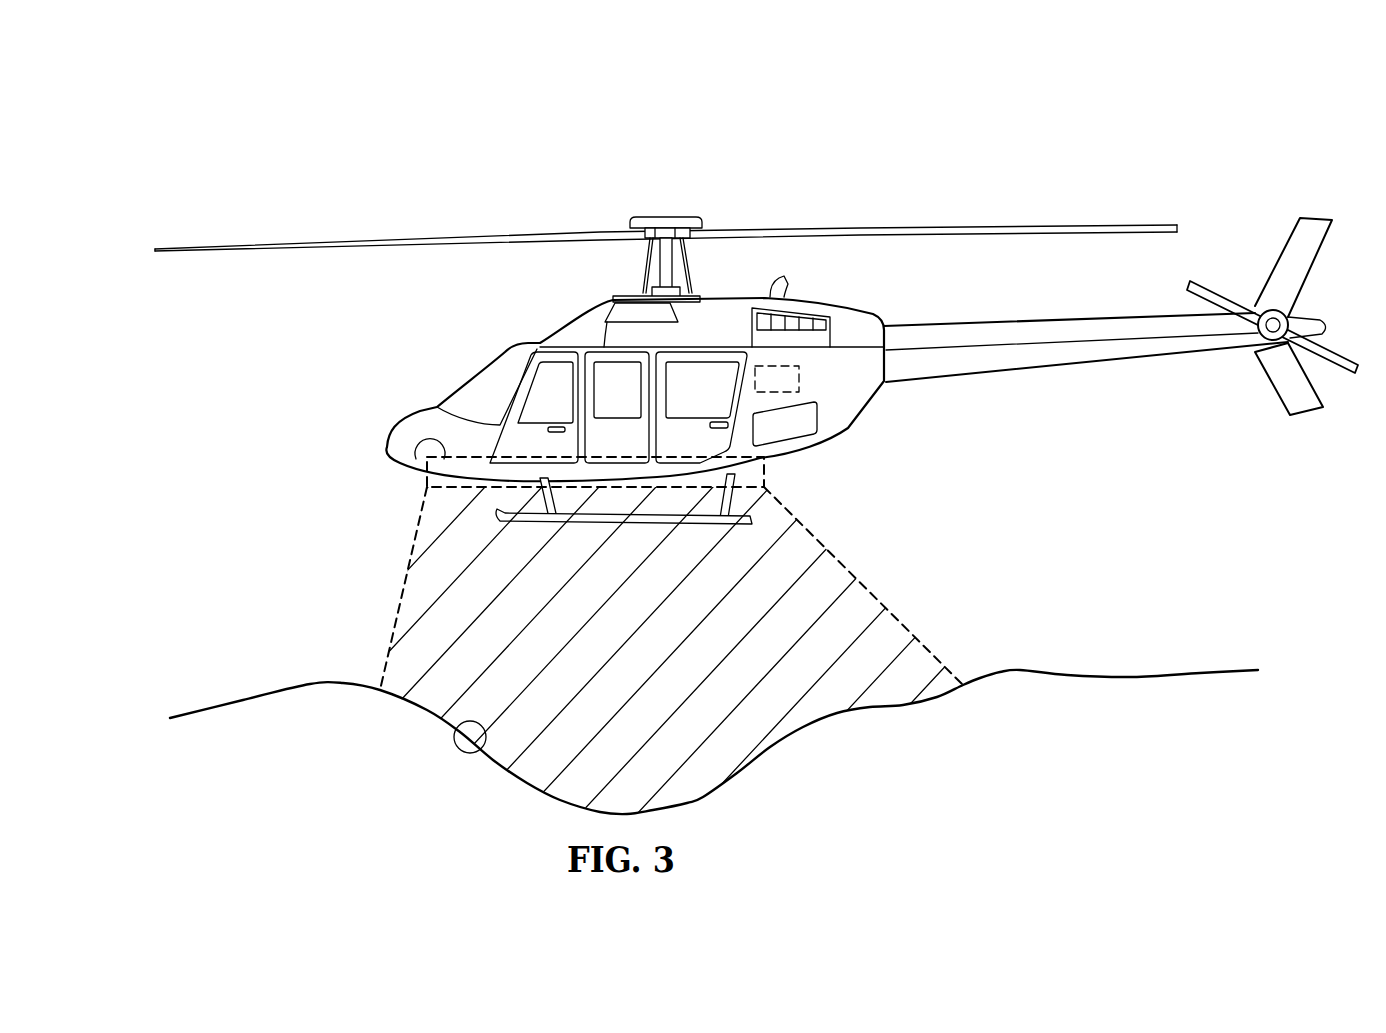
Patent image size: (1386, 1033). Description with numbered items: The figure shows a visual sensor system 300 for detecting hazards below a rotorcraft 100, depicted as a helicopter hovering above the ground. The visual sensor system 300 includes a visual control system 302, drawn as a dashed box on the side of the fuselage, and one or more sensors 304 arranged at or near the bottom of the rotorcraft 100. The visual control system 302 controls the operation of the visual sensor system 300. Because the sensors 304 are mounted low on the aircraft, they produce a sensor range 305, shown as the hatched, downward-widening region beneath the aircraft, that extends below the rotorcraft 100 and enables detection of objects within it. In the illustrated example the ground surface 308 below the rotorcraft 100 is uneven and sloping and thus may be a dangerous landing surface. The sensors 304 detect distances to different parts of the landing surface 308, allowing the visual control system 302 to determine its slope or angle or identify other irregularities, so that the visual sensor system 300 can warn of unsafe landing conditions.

The visual sensor system 300 is at (729, 447).
The rotorcraft 100 is at (756, 370).
The visual control system 302 is at (800, 383).
The sensors 304 is at (413, 463).
The sensor range 305 is at (856, 563).
The ground surface 308 is at (478, 753).